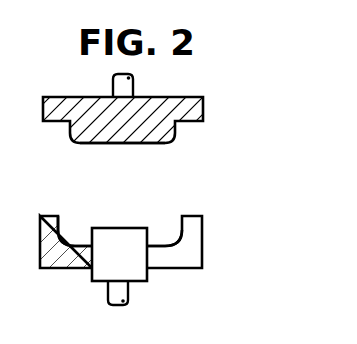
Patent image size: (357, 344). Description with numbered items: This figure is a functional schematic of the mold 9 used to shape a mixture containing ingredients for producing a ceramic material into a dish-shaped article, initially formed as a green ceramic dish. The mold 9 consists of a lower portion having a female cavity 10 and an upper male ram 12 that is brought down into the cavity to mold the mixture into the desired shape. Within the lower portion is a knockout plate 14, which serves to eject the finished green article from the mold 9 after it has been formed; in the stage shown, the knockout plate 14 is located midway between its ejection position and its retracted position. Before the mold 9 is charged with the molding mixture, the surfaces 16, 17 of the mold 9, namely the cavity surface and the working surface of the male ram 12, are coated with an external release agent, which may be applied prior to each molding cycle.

The mold 9 is at (192, 257).
The female cavity 10 is at (157, 243).
The male ram 12 is at (200, 110).
The knockout plate 14 is at (123, 238).
The mold surface 16 is at (63, 238).
The mold surface 17 is at (146, 142).